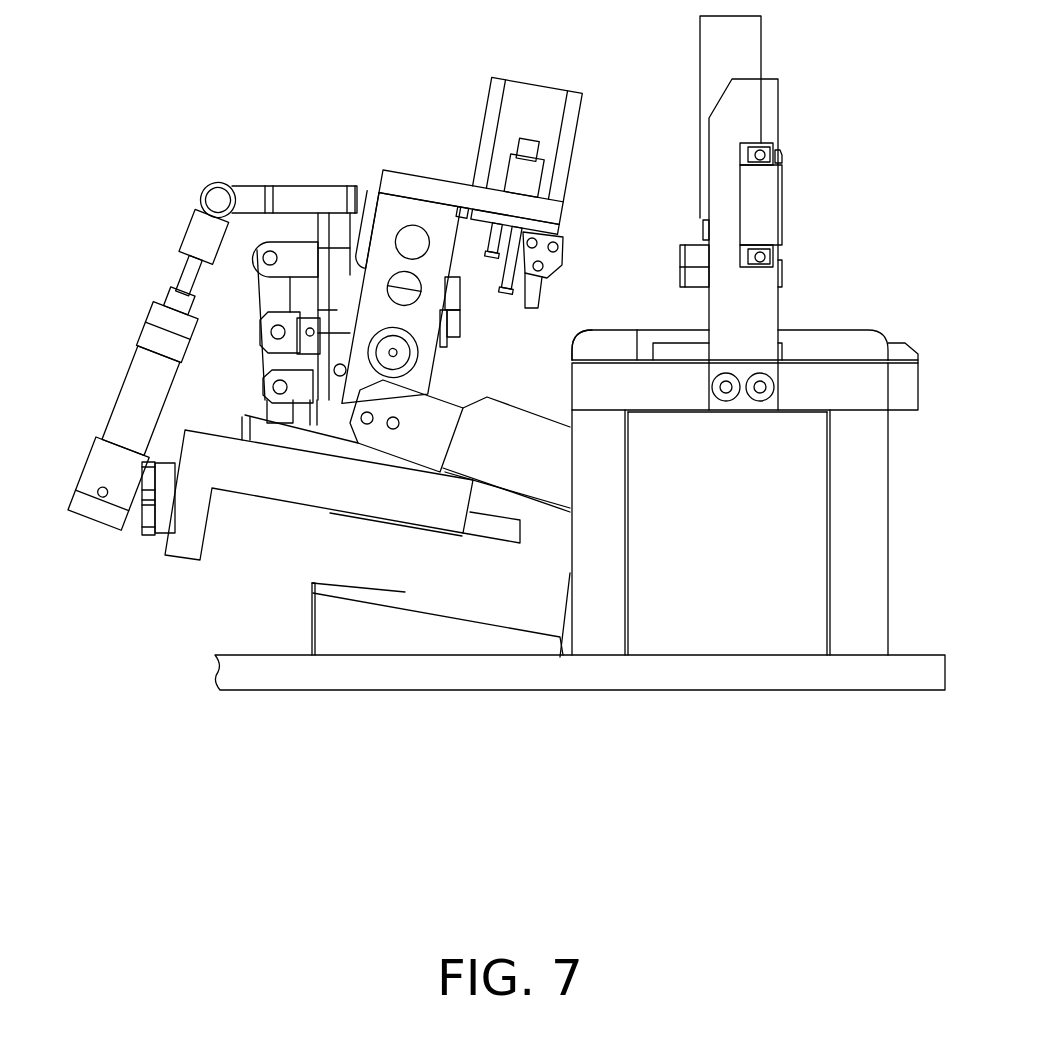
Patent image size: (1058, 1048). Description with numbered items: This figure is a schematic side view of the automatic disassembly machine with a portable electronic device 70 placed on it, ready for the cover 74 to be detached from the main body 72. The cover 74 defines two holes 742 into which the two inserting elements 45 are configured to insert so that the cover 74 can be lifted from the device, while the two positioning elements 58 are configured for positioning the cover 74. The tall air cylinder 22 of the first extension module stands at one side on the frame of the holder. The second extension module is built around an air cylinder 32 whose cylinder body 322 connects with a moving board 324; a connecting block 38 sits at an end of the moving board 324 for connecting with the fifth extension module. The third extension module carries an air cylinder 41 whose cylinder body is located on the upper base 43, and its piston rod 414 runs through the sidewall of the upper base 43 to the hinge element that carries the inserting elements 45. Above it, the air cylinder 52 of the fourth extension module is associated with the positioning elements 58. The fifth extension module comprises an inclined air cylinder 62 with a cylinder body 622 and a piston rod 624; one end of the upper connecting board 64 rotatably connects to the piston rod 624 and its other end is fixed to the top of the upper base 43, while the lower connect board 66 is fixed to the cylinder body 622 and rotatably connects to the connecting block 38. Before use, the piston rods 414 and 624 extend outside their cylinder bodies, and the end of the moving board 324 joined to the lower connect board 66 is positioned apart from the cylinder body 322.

The air cylinder 22 is at (748, 50).
The air cylinder 32 is at (333, 543).
The cylinder body 322 is at (315, 583).
The moving board 324 is at (272, 482).
The connecting block 38 is at (137, 513).
The air cylinder 41 is at (366, 205).
The piston rod 414 is at (325, 260).
The upper base 43 is at (340, 222).
The inserting elements 45 is at (450, 337).
The air cylinder 52 is at (533, 98).
The positioning elements 58 is at (538, 298).
The air cylinder 62 is at (145, 366).
The cylinder body 622 is at (153, 369).
The piston rod 624 is at (196, 254).
The upper connecting board 64 is at (255, 197).
The lower connect board 66 is at (108, 483).
The portable electronic device 70 is at (739, 403).
The main body 72 is at (667, 335).
The cover 74 is at (610, 342).
The holes 742 is at (576, 349).